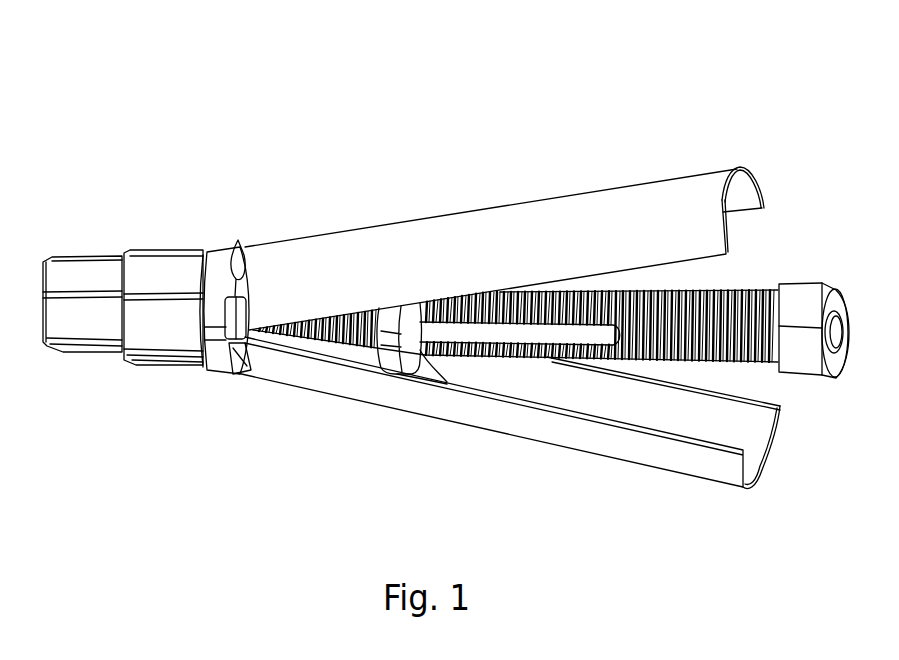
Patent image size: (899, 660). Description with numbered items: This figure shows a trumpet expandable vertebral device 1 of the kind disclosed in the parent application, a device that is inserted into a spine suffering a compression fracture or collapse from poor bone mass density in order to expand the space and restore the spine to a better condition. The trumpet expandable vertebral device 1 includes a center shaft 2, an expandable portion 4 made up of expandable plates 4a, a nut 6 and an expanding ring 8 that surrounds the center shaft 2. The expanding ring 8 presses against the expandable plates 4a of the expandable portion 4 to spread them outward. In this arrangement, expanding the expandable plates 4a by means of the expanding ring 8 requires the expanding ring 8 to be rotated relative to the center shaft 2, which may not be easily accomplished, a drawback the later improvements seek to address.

The trumpet expandable vertebral device 1 is at (613, 96).
The center shaft 2 is at (767, 360).
The expandable portion 4 is at (420, 224).
The expandable plates 4a is at (525, 220).
The nut 6 is at (793, 287).
The expanding ring 8 is at (383, 330).